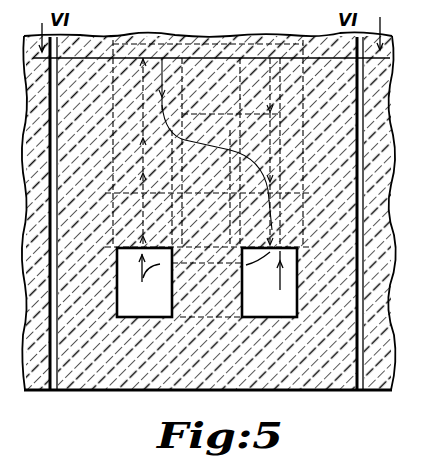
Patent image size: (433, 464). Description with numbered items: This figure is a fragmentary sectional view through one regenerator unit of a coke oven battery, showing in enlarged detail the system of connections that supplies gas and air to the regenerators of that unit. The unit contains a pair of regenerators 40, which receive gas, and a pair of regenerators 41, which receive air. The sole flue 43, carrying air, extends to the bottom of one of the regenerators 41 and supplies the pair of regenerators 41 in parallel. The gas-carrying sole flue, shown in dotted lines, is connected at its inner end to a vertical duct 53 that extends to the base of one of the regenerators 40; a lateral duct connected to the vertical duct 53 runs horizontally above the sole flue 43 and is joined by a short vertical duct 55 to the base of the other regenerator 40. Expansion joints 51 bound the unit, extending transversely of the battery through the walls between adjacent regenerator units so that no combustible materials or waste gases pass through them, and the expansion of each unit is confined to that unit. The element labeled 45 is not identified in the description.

The regenerators 40 is at (310, 463).
The regenerators 41 is at (123, 458).
The sole flue 43 is at (158, 317).
The side wall 45 is at (411, 266).
The expansion joints 51 is at (52, 390).
The vertical duct 53 is at (372, 149).
The short vertical duct 55 is at (132, 44).